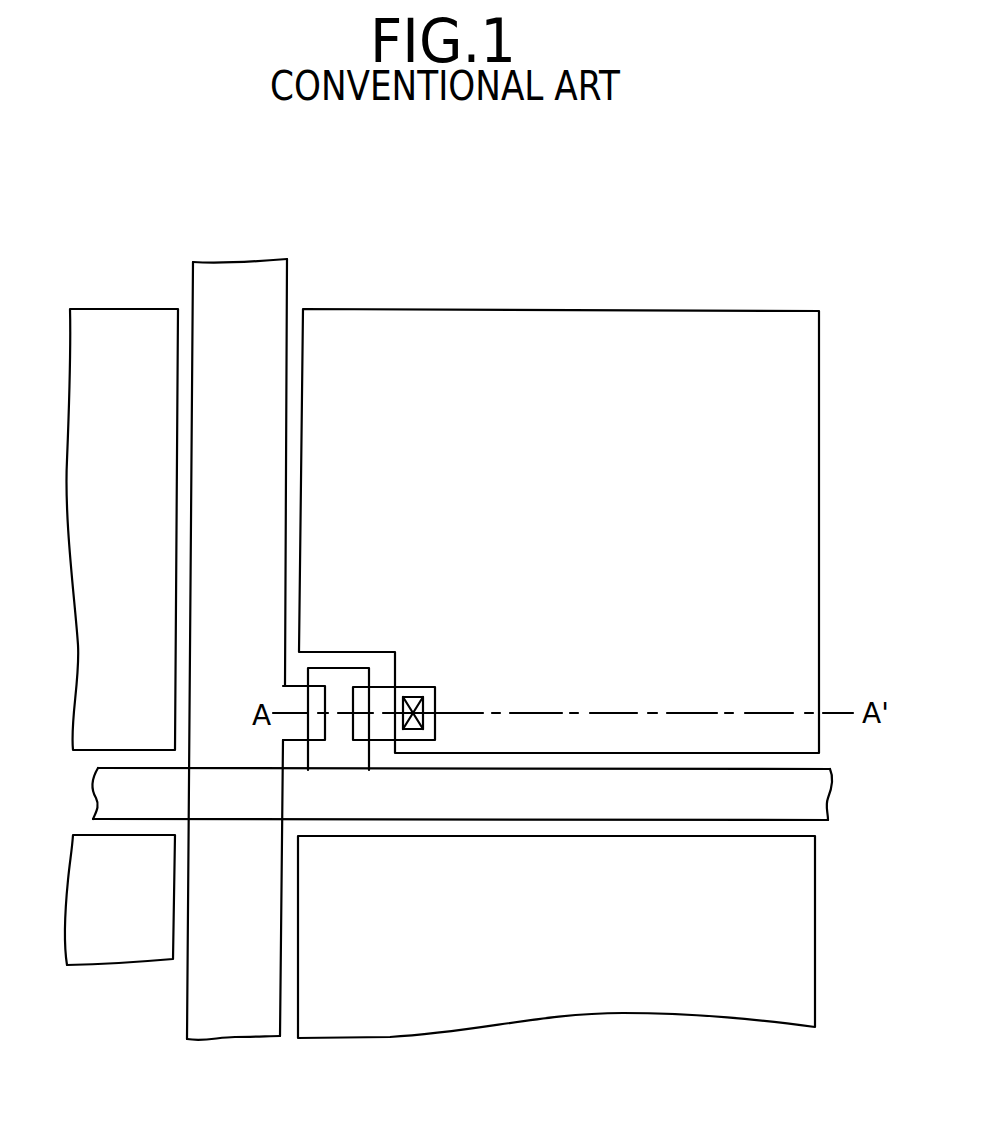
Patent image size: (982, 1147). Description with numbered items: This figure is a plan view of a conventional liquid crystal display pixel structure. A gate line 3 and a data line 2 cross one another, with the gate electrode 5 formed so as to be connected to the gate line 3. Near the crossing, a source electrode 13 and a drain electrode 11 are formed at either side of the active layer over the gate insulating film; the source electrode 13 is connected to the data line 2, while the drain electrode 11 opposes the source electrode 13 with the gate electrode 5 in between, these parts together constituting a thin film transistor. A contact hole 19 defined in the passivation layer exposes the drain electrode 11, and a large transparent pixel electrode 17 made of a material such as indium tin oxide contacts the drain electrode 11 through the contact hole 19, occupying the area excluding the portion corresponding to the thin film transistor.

The data line 2 is at (247, 278).
The gate line 3 is at (832, 788).
The gate electrode 5 is at (350, 678).
The drain electrode 11 is at (428, 688).
The source electrode 13 is at (297, 695).
The pixel electrode 17 is at (812, 511).
The contact hole 19 is at (427, 708).